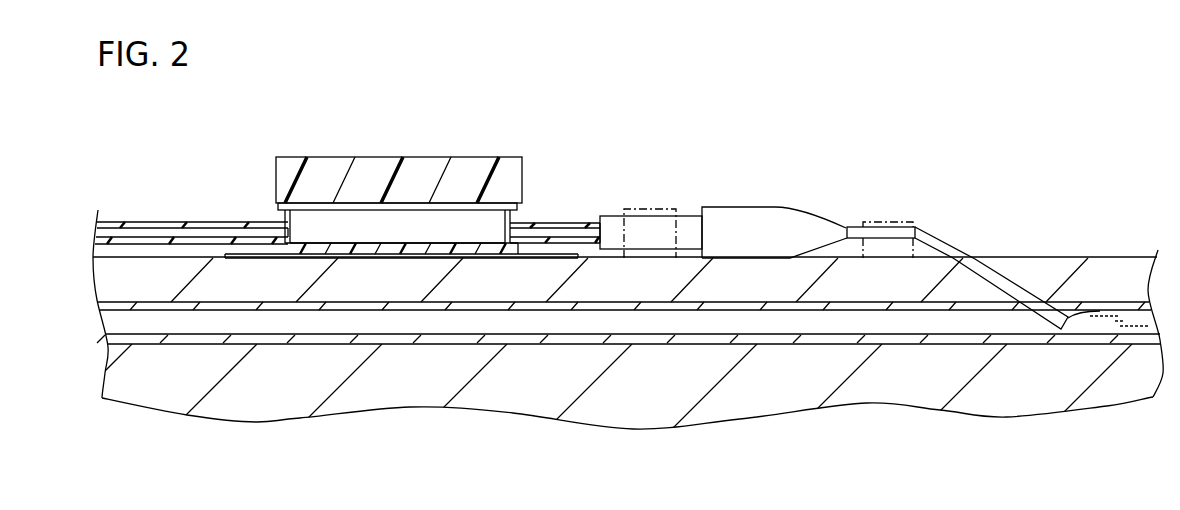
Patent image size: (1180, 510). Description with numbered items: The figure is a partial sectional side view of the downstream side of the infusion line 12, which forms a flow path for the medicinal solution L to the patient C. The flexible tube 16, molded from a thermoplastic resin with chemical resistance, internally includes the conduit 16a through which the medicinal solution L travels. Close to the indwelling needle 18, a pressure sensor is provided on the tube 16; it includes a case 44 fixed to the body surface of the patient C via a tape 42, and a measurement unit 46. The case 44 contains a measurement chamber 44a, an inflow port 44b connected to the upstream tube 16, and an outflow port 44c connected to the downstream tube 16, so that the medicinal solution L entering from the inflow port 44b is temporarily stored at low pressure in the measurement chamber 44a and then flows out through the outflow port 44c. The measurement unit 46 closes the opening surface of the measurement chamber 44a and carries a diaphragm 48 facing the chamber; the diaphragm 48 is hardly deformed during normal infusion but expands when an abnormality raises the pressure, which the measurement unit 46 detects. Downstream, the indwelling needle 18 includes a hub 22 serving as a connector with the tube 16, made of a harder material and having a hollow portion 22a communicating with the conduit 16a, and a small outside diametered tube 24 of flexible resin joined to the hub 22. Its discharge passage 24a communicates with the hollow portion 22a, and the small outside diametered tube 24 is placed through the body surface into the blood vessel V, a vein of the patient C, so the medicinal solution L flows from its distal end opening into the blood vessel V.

The infusion line 12 is at (209, 210).
The tube 16 is at (130, 222).
The conduit 16a is at (167, 237).
The tape 42 is at (242, 253).
The case 44 is at (524, 213).
The measurement chamber 44a is at (389, 220).
The inflow port 44b is at (288, 211).
The outflow port 44c is at (502, 232).
The measurement unit 46 is at (371, 170).
The diaphragm 48 is at (417, 203).
The indwelling needle 18 is at (757, 162).
The hub 22 is at (752, 207).
The hollow portion 22a is at (718, 223).
The small outside diametered tube 24 is at (857, 227).
The discharge passage 24a is at (962, 248).
The patient C is at (1085, 257).
The blood vessel V is at (1027, 344).
The medicinal solution L is at (1098, 326).